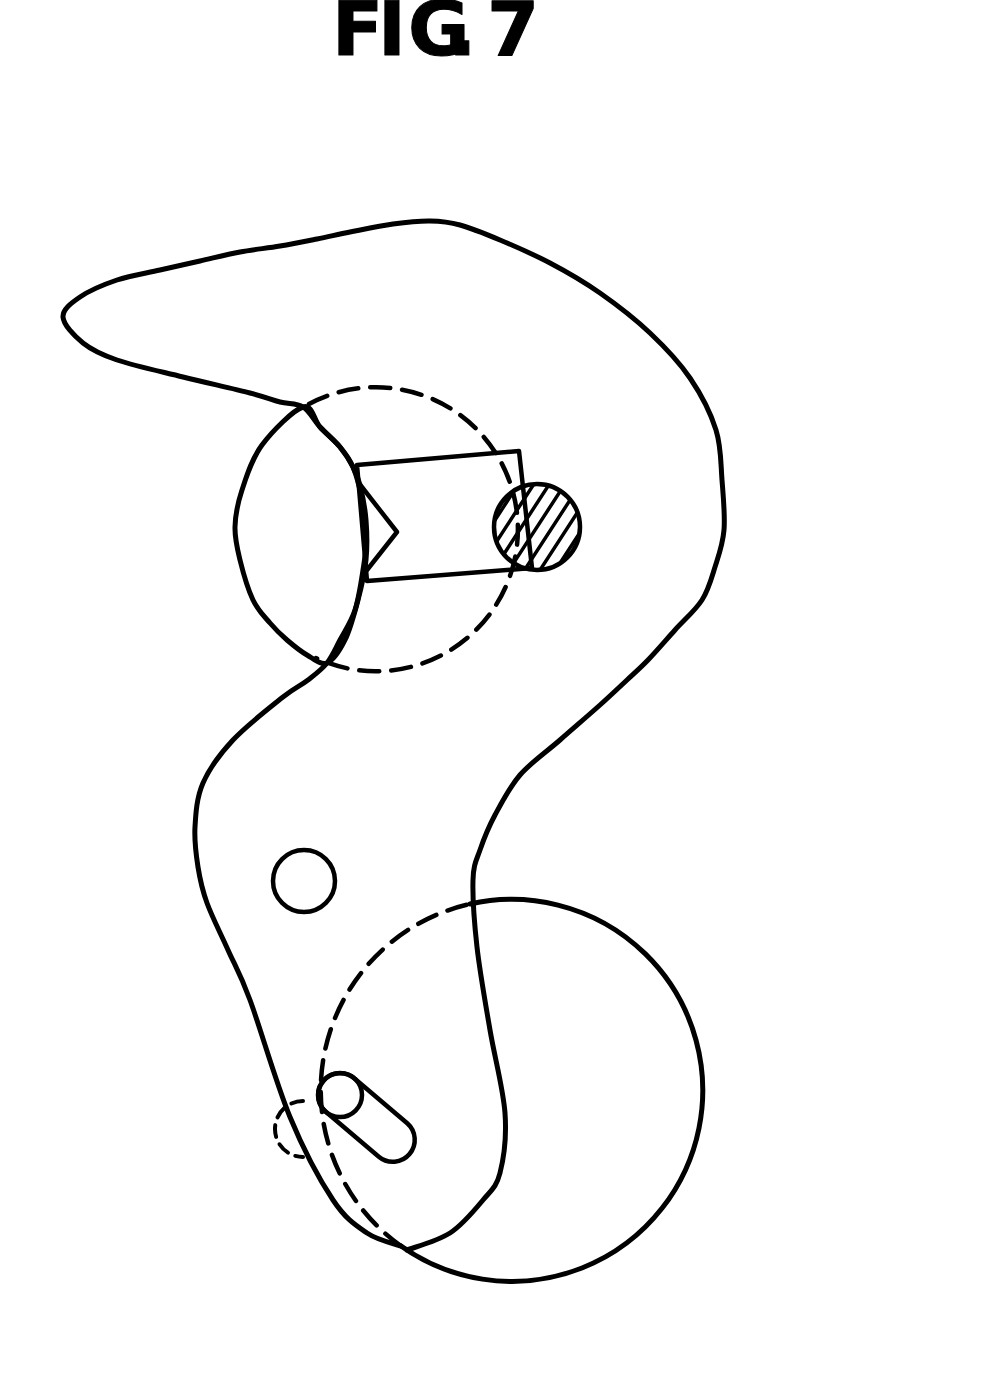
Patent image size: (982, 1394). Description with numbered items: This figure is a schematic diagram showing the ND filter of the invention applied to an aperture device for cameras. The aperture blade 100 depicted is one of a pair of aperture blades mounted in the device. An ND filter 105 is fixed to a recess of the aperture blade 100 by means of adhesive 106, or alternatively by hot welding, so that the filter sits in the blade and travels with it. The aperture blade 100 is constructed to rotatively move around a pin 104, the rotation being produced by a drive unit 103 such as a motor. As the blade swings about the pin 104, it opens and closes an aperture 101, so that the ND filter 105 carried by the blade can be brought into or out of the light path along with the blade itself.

The aperture blade 100 is at (238, 249).
The aperture 101 is at (235, 527).
The drive unit 103 is at (673, 990).
The pin 104 is at (272, 882).
The ND filter 105 is at (453, 473).
The adhesive 106 is at (565, 497).